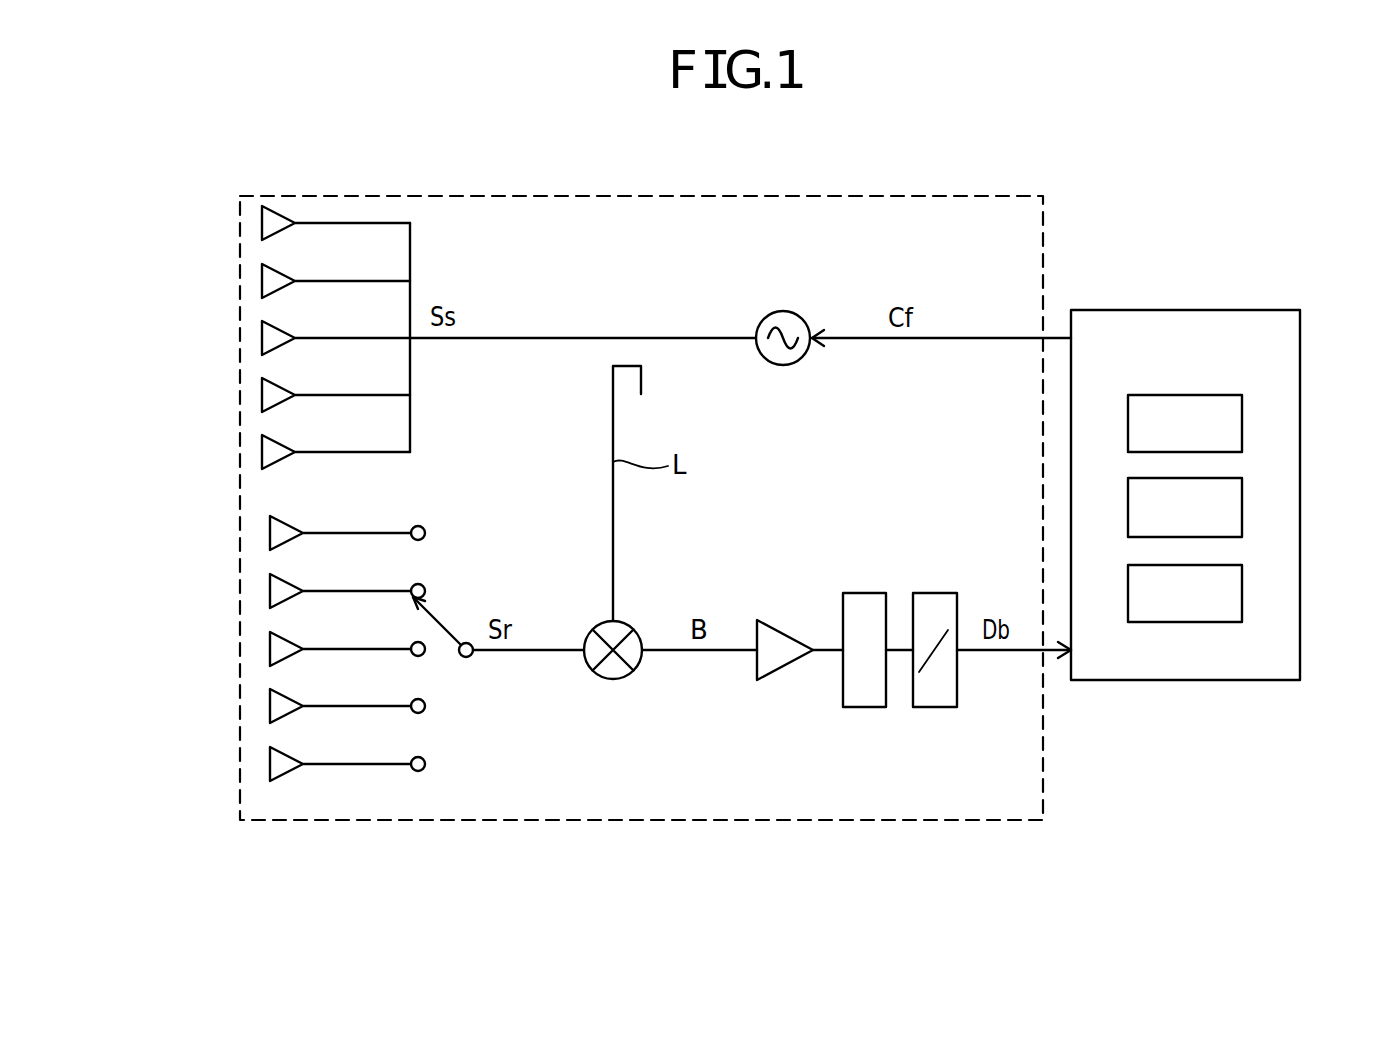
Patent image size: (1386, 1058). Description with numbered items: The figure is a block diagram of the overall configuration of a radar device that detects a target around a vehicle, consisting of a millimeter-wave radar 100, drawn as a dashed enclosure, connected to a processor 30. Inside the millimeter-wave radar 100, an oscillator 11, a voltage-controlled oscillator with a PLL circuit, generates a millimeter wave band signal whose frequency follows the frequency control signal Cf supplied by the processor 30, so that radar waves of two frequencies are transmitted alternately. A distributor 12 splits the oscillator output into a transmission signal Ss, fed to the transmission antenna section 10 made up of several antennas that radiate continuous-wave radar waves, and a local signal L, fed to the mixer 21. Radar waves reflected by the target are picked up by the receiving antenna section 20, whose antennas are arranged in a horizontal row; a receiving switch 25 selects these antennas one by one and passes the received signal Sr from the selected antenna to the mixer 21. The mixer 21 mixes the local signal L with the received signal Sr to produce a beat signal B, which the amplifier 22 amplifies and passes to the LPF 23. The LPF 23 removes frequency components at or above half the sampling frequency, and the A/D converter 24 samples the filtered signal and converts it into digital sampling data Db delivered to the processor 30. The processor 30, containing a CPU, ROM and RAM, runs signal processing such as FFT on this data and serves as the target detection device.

The millimeter-wave radar 100 is at (337, 183).
The transmission antenna section 10 is at (258, 326).
The oscillator 11 is at (786, 312).
The distributor 12 is at (627, 352).
The receiving antenna section 20 is at (258, 642).
The mixer 21 is at (613, 679).
The amplifier 22 is at (785, 665).
The LPF 23 is at (865, 707).
The A/D converter 24 is at (937, 707).
The receiving switch 25 is at (470, 657).
The processor 30 is at (1222, 310).